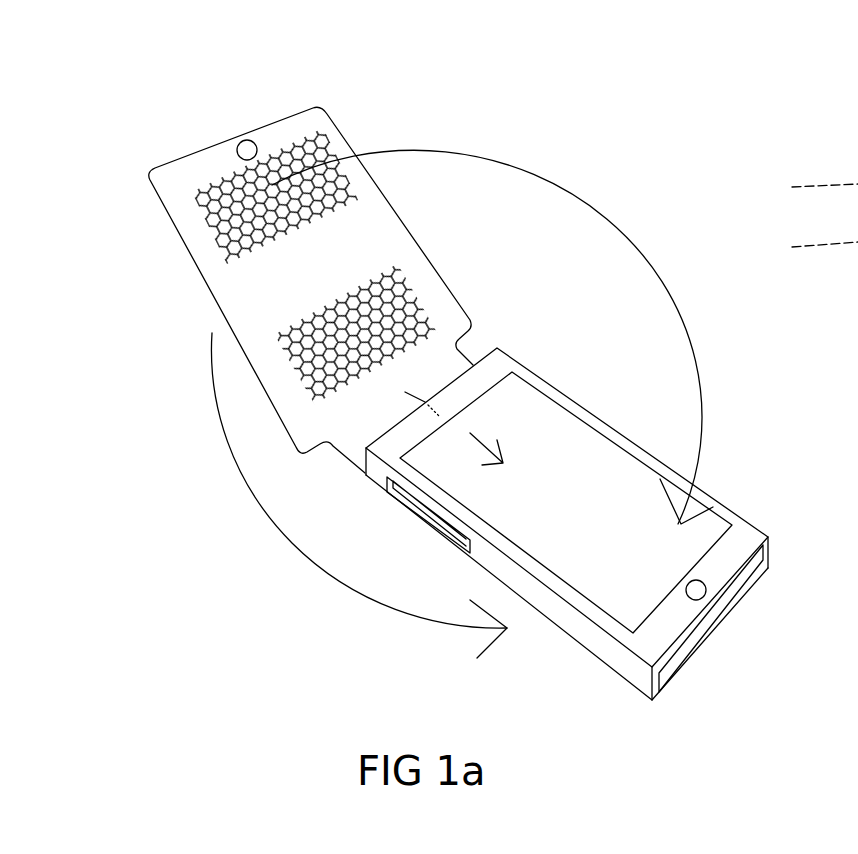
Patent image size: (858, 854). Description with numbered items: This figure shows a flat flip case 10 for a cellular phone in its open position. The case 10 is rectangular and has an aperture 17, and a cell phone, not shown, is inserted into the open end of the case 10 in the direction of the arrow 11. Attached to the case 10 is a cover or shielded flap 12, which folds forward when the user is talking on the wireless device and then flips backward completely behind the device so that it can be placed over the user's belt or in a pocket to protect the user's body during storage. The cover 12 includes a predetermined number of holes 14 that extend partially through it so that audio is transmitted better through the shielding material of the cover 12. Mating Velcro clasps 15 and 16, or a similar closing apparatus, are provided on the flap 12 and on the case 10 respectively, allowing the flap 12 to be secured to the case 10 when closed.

The flat flip case 10 is at (600, 405).
The arrow 11 is at (471, 433).
The cover or shielded flap 12 is at (388, 227).
The holes 14 is at (410, 318).
The Velcro clasp 15 is at (240, 143).
The Velcro clasp 16 is at (706, 592).
The aperture 17 is at (697, 540).